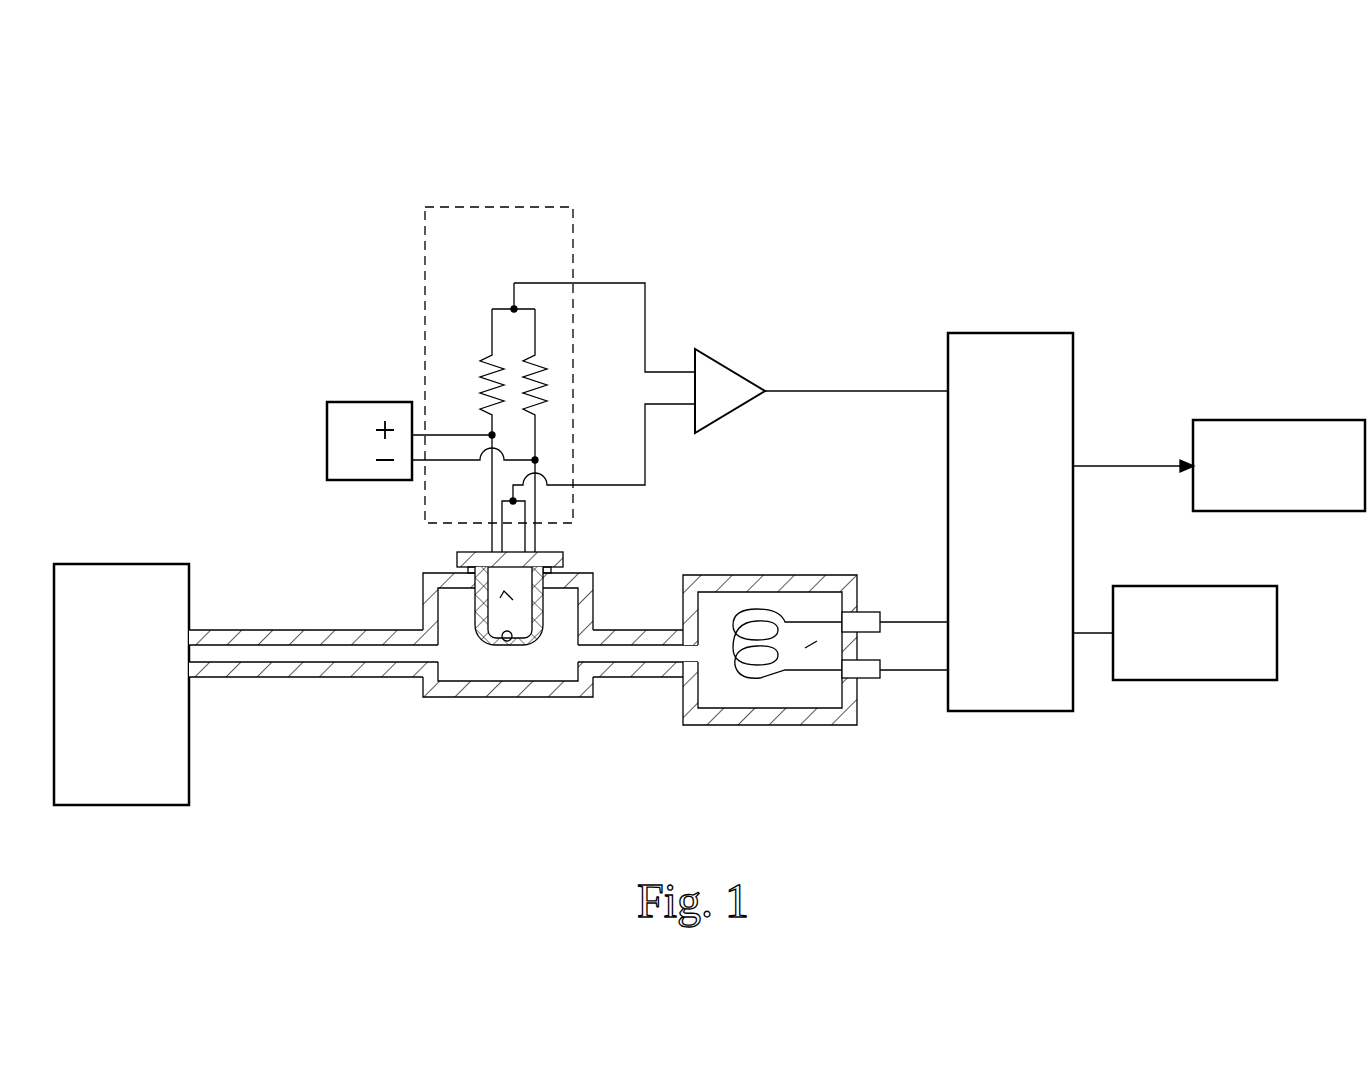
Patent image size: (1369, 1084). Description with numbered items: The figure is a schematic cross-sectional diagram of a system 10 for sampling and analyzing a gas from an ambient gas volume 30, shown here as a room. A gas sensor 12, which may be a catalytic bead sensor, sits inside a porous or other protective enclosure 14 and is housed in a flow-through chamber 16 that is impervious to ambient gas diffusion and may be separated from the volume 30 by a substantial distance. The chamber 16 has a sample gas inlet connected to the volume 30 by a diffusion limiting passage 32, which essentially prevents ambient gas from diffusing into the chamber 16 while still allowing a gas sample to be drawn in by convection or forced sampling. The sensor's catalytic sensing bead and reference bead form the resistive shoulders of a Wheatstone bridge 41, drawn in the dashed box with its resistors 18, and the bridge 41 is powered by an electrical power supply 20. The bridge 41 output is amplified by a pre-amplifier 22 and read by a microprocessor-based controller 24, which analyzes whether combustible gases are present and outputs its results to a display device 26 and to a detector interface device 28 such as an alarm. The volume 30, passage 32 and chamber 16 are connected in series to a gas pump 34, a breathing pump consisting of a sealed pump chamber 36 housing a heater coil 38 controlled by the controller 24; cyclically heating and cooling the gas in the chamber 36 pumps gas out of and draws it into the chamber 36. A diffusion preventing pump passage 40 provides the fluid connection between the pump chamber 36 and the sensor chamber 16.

The system 10 is at (836, 306).
The gas sensor 12 is at (504, 597).
The protective enclosure 14 is at (545, 607).
The flow-through chamber 16 is at (487, 697).
The bridge resistors 18 is at (480, 358).
The electrical power supply 20 is at (327, 440).
The pre-amplifier 22 is at (725, 408).
The controller 24 is at (1005, 712).
The display device 26 is at (1180, 681).
The detector interface device 28 is at (1262, 420).
The ambient gas volume 30 is at (189, 787).
The diffusion limiting passage 32 is at (283, 678).
The gas pump 34 is at (803, 645).
The pump chamber 36 is at (840, 722).
The heater coil 38 is at (767, 678).
The pump passage 40 is at (647, 678).
The Wheatstone bridge 41 is at (470, 206).